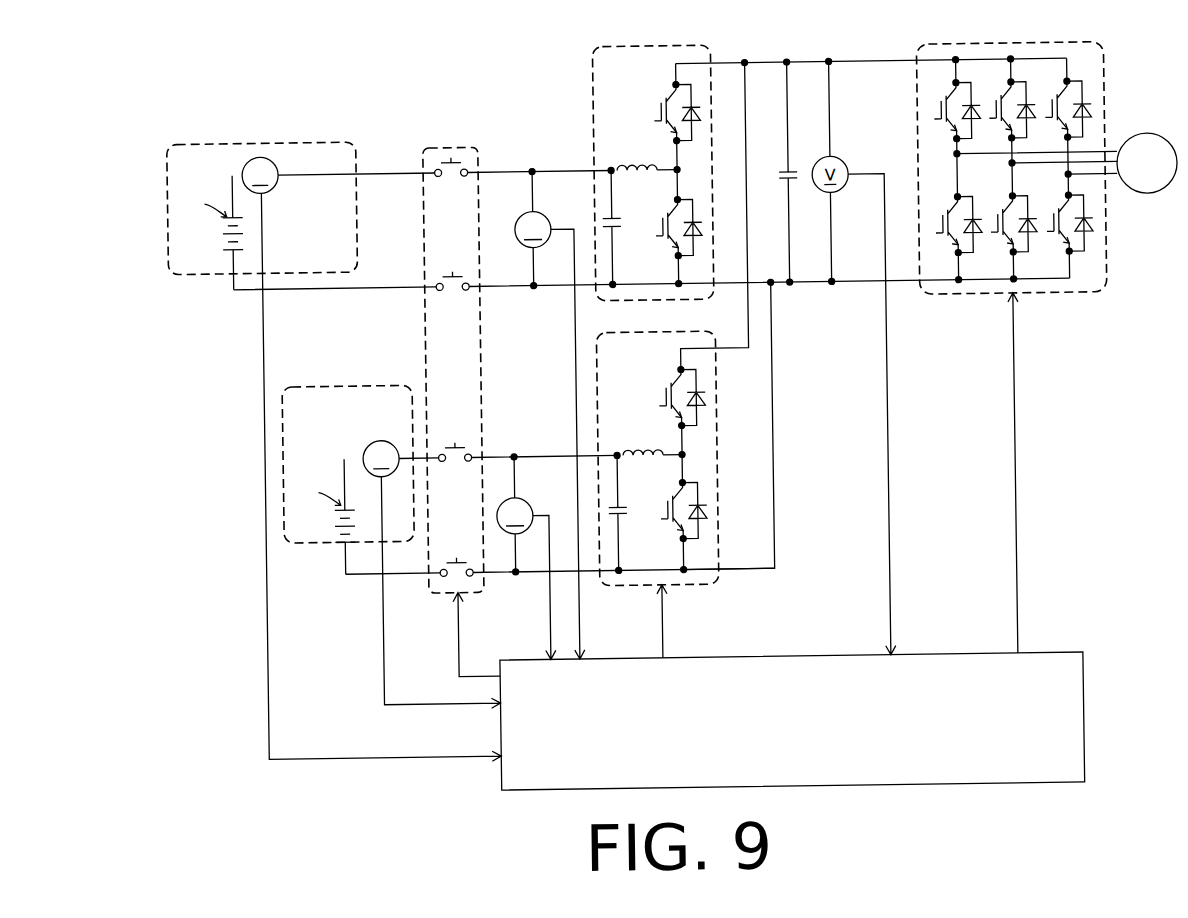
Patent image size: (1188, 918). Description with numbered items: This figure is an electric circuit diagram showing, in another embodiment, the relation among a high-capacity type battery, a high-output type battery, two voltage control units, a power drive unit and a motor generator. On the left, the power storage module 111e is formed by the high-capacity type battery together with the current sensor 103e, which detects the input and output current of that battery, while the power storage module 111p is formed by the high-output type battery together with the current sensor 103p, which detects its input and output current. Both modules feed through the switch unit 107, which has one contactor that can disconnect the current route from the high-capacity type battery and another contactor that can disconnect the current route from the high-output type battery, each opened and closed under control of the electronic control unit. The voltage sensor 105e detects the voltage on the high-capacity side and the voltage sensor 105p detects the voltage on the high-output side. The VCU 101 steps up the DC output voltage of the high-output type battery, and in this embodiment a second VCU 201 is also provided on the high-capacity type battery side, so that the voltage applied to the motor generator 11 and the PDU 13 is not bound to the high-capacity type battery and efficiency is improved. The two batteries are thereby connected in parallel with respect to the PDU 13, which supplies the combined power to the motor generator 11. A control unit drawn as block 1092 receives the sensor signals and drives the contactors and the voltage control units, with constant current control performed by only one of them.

The power storage module 111e is at (197, 270).
The current sensor 103e is at (273, 186).
The switch unit 107 is at (426, 337).
The voltage sensor 105e is at (578, 199).
The VCU 201 is at (597, 70).
The PDU 13 is at (1067, 301).
The motor generator 11 is at (1150, 200).
The power storage module 111p is at (310, 540).
The current sensor 103p is at (370, 443).
The voltage sensor 105p is at (560, 484).
The VCU 101 is at (717, 578).
The electronic control unit ECU 1092 is at (1080, 718).